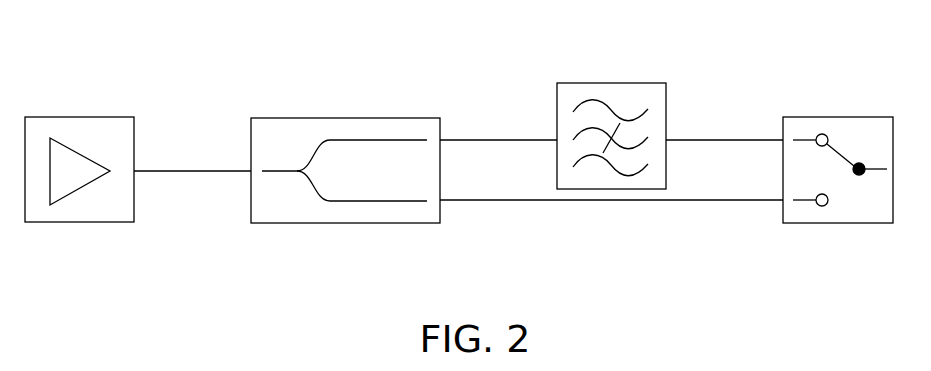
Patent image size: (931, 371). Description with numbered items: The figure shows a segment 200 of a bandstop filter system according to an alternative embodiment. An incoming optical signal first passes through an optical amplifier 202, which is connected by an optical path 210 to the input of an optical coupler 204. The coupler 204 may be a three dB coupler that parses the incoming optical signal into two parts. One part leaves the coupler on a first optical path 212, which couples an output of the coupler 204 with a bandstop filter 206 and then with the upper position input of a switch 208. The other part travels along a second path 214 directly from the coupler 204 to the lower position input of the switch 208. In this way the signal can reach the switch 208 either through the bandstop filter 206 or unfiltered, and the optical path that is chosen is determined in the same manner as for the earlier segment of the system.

The segment 200 is at (71, 35).
The optical amplifier 202 is at (80, 116).
The optical coupler 204 is at (327, 117).
The bandstop filter 206 is at (608, 82).
The switch 208 is at (840, 115).
The optical path 210 is at (193, 172).
The first optical path 212 is at (487, 138).
The second path 214 is at (483, 201).